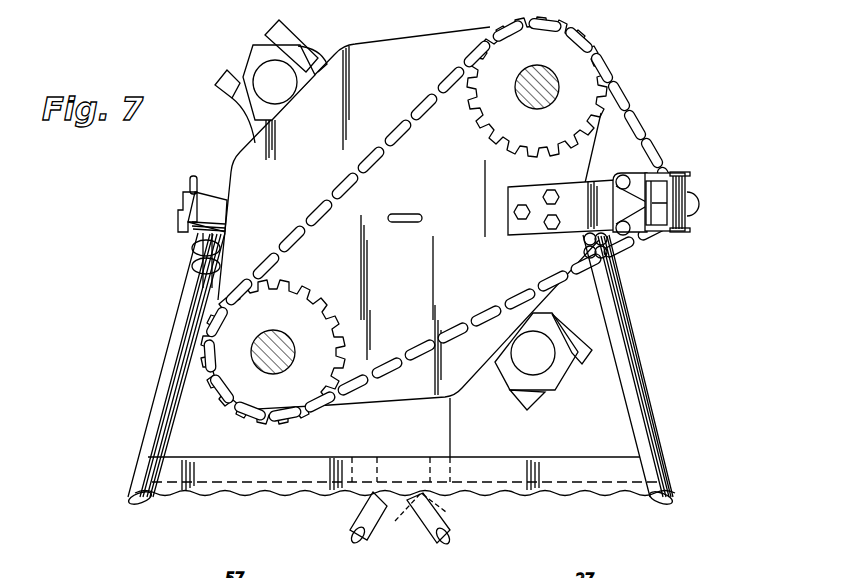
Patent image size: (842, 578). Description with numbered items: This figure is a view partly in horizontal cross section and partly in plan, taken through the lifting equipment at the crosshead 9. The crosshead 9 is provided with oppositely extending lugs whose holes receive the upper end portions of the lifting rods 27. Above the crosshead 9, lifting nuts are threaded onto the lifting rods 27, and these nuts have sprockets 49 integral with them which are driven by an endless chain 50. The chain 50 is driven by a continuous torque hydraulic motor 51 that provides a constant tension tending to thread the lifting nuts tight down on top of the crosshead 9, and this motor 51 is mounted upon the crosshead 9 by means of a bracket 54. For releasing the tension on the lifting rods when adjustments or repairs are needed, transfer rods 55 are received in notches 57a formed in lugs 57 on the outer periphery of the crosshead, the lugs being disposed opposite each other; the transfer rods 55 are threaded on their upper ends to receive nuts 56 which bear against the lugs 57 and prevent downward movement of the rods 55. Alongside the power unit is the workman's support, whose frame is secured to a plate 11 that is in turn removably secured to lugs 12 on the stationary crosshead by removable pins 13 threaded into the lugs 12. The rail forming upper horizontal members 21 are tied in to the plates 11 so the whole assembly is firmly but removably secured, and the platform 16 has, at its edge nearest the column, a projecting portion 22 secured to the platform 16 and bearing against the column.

The crosshead 9 is at (237, 160).
The plate 11 is at (198, 264).
The lugs 12 is at (200, 232).
The removable pins 13 is at (180, 212).
The platform 16 is at (270, 497).
The rail forming upper horizontal members 21 is at (166, 382).
The projecting portion 22 is at (358, 446).
The lifting rods 27 is at (526, 68).
The sprockets 49 is at (588, 80).
The endless chain 50 is at (346, 172).
The continuous torque hydraulic motor 51 is at (692, 212).
The bracket 54 is at (596, 186).
The transfer rods 55 is at (265, 86).
The nuts 56 is at (250, 60).
The lugs 57 is at (216, 76).
The notches 57a is at (268, 42).